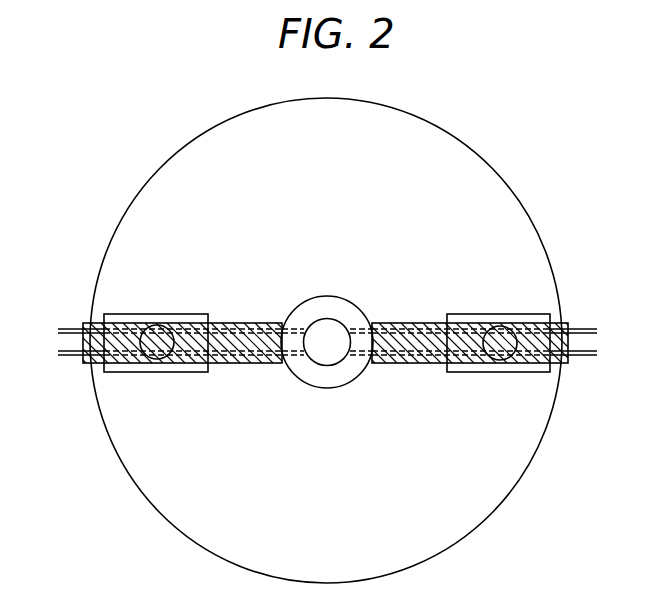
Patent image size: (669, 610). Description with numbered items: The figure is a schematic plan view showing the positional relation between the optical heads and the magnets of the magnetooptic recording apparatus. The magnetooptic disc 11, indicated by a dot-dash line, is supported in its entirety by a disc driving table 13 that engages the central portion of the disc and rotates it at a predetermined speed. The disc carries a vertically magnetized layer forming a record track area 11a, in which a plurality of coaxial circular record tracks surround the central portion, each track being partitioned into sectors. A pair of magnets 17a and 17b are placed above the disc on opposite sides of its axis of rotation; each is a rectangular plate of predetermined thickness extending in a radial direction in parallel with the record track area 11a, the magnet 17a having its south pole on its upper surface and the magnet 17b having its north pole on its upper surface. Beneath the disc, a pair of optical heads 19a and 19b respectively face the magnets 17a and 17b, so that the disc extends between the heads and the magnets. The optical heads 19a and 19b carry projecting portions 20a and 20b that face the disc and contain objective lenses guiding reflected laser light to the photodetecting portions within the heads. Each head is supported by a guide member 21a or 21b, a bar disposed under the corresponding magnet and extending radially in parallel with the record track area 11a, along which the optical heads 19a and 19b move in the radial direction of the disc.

The magnetooptic disc 11 is at (506, 181).
The record track area 11a is at (487, 290).
The disc driving table 13 is at (324, 302).
The magnet 17a is at (236, 364).
The magnet 17b is at (400, 364).
The optical head 19a is at (133, 317).
The optical head 19b is at (455, 316).
The projecting portion 20a is at (181, 325).
The projecting portion 20b is at (521, 324).
The guide member 21a is at (57, 353).
The guide member 21b is at (600, 354).